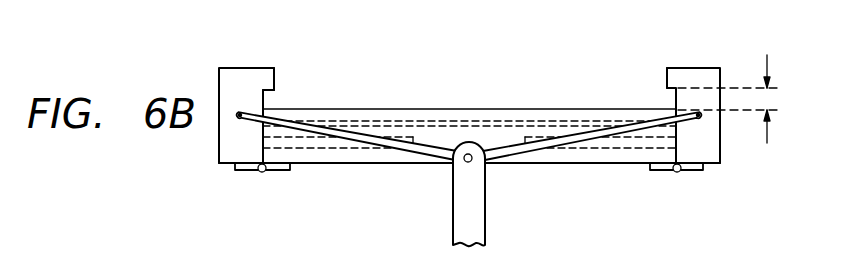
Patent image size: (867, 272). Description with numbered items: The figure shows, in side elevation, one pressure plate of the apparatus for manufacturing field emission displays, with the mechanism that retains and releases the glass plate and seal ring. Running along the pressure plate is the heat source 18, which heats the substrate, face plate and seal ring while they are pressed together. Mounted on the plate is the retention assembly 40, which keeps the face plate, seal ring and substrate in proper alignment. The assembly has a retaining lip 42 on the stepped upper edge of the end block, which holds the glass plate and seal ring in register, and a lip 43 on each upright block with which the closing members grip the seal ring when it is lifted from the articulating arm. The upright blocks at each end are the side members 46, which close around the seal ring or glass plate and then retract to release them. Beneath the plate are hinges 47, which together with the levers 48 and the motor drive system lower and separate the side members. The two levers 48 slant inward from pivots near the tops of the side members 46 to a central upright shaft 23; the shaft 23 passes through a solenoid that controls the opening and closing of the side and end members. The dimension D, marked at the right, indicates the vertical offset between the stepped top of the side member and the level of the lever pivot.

The heat source 18 is at (530, 117).
The retention assembly 40 is at (201, 74).
The retaining lip 42 is at (277, 92).
The lip 43 is at (275, 79).
The side member 46 is at (704, 67).
The hinge 47 is at (246, 172).
The lever 48 is at (432, 154).
The shaft 23 is at (487, 211).
The dimension D is at (780, 103).